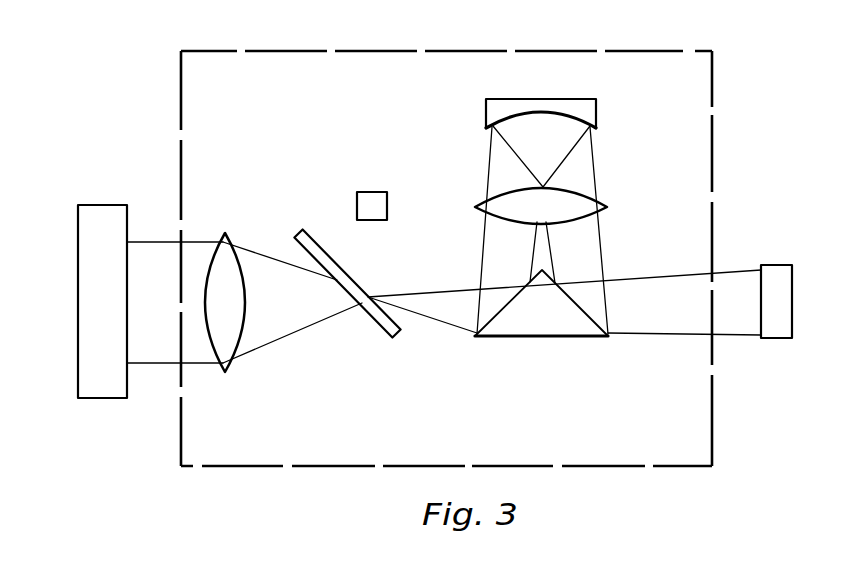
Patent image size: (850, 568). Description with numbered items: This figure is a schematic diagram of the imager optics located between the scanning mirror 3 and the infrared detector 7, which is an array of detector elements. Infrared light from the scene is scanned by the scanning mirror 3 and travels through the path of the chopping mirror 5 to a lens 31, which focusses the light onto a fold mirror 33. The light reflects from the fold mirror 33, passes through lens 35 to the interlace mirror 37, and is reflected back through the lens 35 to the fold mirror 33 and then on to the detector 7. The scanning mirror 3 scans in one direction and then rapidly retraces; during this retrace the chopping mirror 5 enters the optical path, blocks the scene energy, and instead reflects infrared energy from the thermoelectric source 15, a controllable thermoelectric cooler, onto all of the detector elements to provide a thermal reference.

The scanning mirror 3 is at (127, 218).
The lens 31 is at (242, 317).
The chopping mirror 5 is at (338, 265).
The thermoelectric source 15 is at (387, 203).
The interlace mirror 37 is at (596, 110).
The lens 35 is at (604, 206).
The fold mirror 33 is at (610, 338).
The infrared detector 7 is at (792, 277).